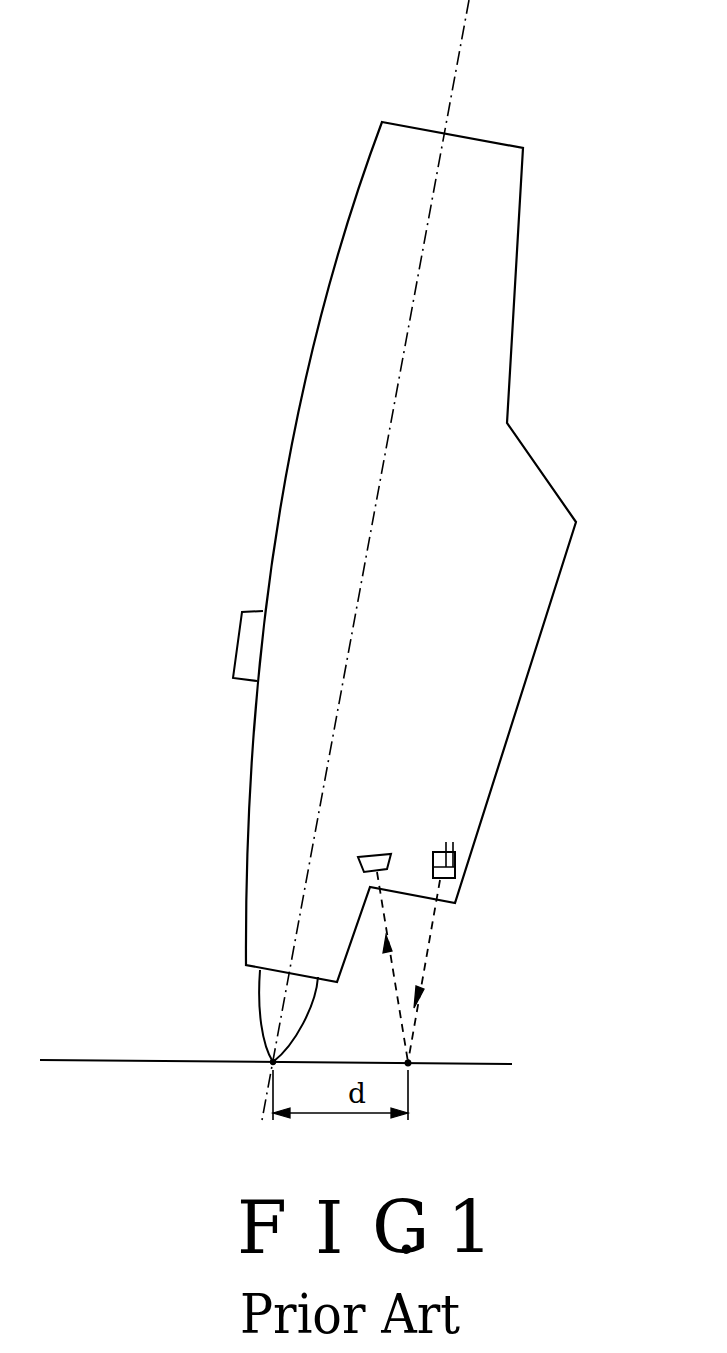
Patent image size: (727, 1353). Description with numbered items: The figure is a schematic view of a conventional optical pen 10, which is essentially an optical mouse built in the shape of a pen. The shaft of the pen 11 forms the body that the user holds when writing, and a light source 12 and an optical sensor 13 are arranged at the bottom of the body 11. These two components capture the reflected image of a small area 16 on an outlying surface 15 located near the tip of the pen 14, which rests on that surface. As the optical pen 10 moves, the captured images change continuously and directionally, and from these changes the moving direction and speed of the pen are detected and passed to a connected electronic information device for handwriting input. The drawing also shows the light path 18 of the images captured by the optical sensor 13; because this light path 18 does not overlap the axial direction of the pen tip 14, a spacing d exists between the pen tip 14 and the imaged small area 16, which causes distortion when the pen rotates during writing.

The optical pen 10 is at (243, 435).
The shaft of the pen 11 is at (248, 785).
The light source 12 is at (452, 868).
The optical sensor 13 is at (388, 860).
The pen tip 14 is at (272, 1060).
The outlying surface 15 is at (495, 1064).
The small area 16 is at (410, 1061).
The light path 18 is at (395, 988).